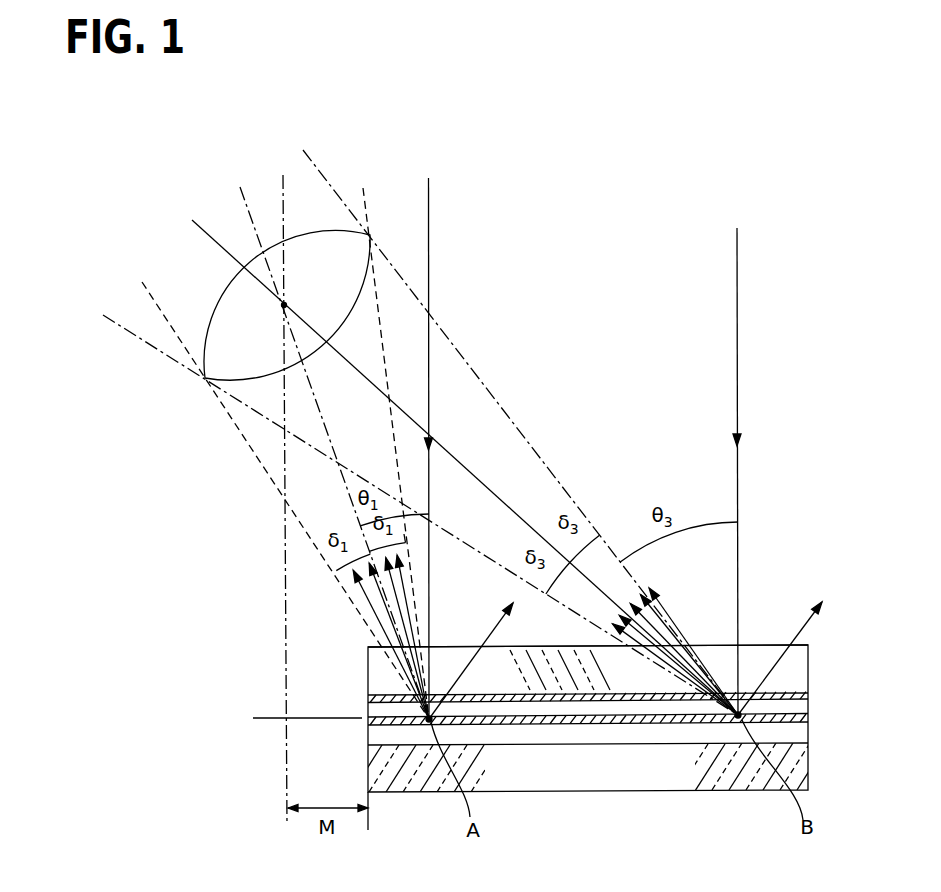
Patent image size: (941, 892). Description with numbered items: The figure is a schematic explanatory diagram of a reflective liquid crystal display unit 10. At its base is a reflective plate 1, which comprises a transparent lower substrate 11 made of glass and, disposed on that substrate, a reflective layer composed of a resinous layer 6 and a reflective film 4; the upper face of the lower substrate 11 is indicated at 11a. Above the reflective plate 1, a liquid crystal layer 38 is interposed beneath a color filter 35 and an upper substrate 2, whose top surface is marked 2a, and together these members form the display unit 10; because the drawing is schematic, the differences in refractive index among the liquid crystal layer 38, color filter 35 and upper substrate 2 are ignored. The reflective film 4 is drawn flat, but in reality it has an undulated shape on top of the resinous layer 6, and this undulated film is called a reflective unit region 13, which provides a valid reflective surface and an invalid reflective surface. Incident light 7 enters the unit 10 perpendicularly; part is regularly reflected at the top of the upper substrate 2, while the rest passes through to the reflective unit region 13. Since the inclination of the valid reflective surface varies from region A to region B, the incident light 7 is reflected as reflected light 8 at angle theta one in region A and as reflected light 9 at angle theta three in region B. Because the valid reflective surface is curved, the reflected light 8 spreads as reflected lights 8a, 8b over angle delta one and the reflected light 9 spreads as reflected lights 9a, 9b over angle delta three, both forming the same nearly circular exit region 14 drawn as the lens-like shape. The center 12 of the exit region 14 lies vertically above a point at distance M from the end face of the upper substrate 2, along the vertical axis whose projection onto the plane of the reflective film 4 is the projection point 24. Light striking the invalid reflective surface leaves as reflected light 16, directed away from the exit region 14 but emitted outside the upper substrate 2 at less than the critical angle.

The reflective plate 1 is at (603, 698).
The upper substrate 2 is at (803, 653).
The surface of light transmitting layer 2a is at (753, 645).
The reflective film 4 is at (810, 714).
The resinous layer 6 is at (378, 735).
The incident light 7 is at (430, 222).
The reflected light 8 is at (322, 414).
The reflected light 8a is at (253, 453).
The reflected light 8b is at (392, 413).
The reflected light 9 is at (475, 475).
The reflected light 9a is at (460, 540).
The reflected light 9b is at (522, 430).
The reflective liquid crystal display unit 10 is at (847, 497).
The lower substrate 11 is at (808, 750).
The substrate surface 11a is at (378, 752).
The center of the exit region 12 is at (287, 305).
The reflective unit region 13 is at (429, 721).
The exit region 14 is at (322, 255).
The reflected light 16 is at (501, 621).
The projection point 24 is at (285, 708).
The color filter 35 is at (808, 683).
The liquid crystal layer 38 is at (808, 703).